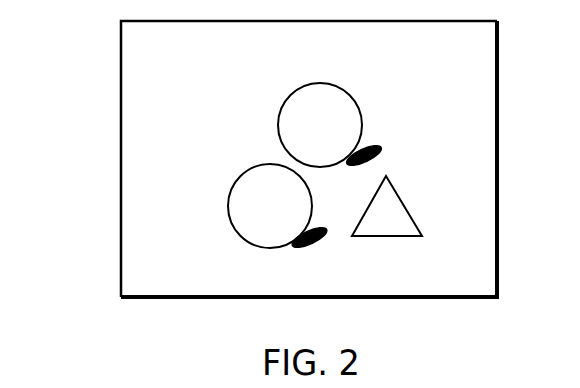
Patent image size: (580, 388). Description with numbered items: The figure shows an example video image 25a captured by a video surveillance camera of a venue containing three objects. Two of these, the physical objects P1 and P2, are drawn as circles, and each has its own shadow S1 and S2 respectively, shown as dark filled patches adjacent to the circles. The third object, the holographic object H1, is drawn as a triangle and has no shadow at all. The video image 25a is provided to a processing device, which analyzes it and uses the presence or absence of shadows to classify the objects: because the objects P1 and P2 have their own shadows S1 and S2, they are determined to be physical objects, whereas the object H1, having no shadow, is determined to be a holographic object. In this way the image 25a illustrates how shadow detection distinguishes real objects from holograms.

The video image 25a is at (120, 149).
The physical object P1 is at (235, 182).
The physical object P2 is at (293, 95).
The shadow S1 is at (313, 245).
The shadow S2 is at (376, 147).
The holographic object H1 is at (400, 197).